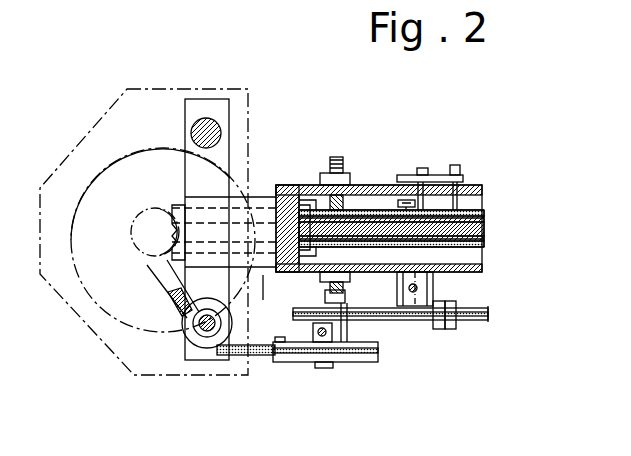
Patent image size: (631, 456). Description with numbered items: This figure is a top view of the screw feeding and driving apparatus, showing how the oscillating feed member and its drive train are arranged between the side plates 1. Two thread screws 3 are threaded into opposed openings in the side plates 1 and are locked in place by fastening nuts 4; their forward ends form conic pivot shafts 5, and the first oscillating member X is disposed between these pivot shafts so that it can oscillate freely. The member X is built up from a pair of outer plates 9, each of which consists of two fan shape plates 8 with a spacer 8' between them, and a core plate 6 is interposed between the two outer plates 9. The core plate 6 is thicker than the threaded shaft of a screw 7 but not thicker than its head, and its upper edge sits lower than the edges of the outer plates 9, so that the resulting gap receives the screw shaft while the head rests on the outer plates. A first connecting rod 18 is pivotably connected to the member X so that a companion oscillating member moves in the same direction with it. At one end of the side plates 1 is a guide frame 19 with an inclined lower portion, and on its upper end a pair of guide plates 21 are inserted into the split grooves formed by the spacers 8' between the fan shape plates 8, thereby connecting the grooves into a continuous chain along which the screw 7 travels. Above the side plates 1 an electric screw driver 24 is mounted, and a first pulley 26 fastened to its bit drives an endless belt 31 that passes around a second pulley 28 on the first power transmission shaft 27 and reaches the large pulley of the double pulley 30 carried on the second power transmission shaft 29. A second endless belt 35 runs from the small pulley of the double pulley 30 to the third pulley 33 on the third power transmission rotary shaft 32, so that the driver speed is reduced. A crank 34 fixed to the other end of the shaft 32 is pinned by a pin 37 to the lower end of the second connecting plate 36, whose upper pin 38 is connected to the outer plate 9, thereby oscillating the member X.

The side plates 1 is at (484, 210).
The thread screws 3 is at (337, 158).
The fastening nuts 4 is at (322, 178).
The conic pivot shafts 5 is at (343, 210).
The core plate 6 is at (486, 229).
The screw 7 is at (283, 215).
The fan shape plates 8 is at (423, 238).
The spacer 8' is at (449, 247).
The outer plates 9 is at (470, 210).
The first connecting rod 18 is at (404, 202).
The guide frame 19 is at (275, 252).
The guide plates 21 is at (288, 187).
The electric screw driver 24 is at (120, 163).
The first pulley 26 is at (150, 225).
The first power transmission shaft 27 is at (205, 325).
The second pulley 28 is at (207, 348).
The second power transmission shaft 29 is at (320, 368).
The double pulley 30 is at (358, 362).
The endless belt 31 is at (263, 356).
The third power transmission rotary shaft 32 is at (418, 332).
The third pulley 33 is at (455, 322).
The crank 34 is at (419, 168).
The endless belt 35 is at (490, 312).
The second connecting plate 36 is at (440, 176).
The pin 37 is at (424, 168).
The pin 38 is at (456, 167).
The first oscillating member X is at (486, 214).